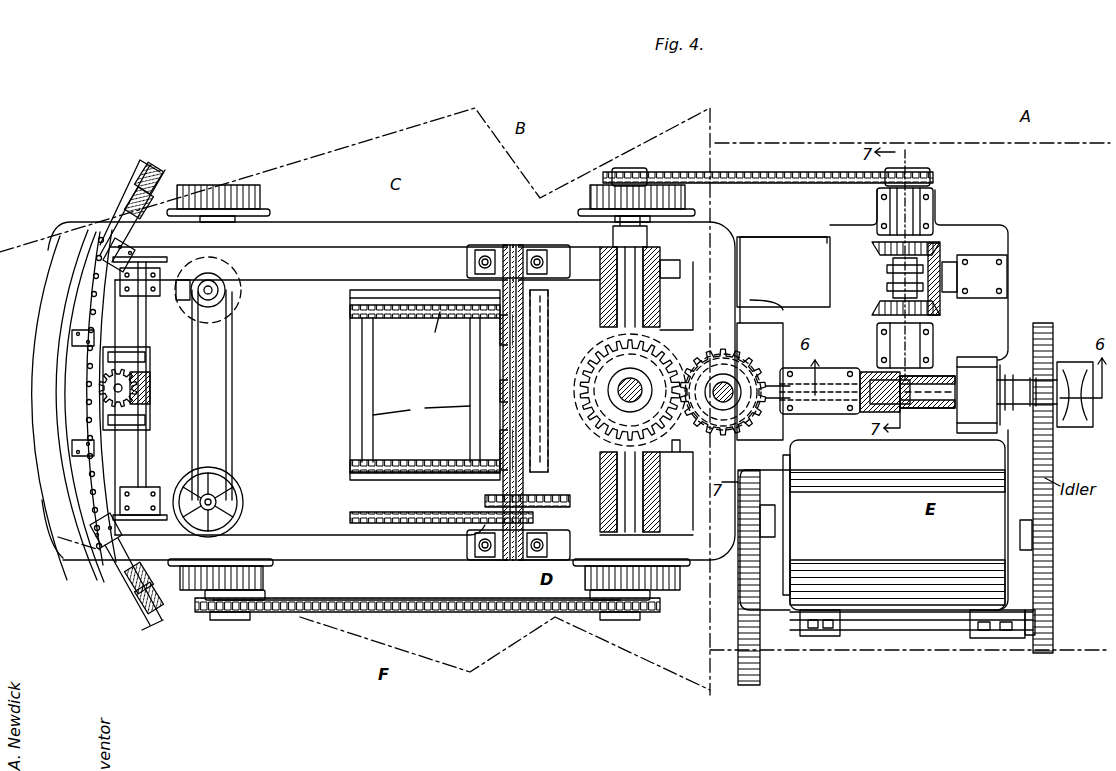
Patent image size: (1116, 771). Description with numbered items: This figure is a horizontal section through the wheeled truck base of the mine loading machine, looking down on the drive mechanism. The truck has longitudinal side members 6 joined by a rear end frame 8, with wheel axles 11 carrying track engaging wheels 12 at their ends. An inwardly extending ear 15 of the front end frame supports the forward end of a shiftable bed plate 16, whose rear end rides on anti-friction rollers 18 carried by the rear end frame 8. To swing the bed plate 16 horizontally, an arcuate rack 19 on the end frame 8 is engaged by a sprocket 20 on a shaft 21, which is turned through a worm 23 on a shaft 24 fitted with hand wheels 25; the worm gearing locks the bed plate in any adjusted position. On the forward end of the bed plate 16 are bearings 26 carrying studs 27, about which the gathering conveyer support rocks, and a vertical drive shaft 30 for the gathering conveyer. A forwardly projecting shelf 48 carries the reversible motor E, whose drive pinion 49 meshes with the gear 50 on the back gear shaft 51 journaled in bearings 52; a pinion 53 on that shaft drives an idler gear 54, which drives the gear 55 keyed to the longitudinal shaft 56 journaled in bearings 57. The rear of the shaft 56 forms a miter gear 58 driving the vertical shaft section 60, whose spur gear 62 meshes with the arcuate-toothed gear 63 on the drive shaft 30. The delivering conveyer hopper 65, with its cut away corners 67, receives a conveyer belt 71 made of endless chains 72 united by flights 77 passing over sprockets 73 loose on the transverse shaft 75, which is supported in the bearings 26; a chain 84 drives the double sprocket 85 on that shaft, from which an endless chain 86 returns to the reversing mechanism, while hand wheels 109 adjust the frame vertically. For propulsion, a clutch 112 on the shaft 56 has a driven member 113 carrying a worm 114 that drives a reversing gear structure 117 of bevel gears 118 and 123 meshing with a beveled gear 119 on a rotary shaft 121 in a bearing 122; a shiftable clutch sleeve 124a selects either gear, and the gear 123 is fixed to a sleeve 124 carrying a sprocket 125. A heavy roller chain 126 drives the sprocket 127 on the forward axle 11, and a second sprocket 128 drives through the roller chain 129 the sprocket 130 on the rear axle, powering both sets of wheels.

The side members 6 is at (305, 228).
The rear end frame 8 is at (40, 476).
The wheel axles 11 is at (212, 575).
The track engaging wheels 12 is at (210, 200).
The ear 15 is at (745, 320).
The bed plate 16 is at (296, 292).
The anti-friction rollers 18 is at (148, 163).
The arcuate rack 19 is at (95, 298).
The sprocket 20 is at (95, 405).
The shaft 21 is at (145, 372).
The worm 23 is at (150, 395).
The shaft 24 is at (150, 447).
The hand wheels 25 is at (168, 260).
The bearings 26 is at (660, 250).
The studs 27 is at (660, 292).
The drive shaft 30 is at (735, 358).
The shelf 48 is at (998, 308).
The drive pinion 49 is at (775, 520).
The gear 50 is at (775, 683).
The back gear shaft 51 is at (905, 630).
The bearings 52 is at (825, 637).
The pinion 53 is at (1053, 623).
The idler gear 54 is at (1053, 554).
The gear 55 is at (1053, 340).
The shaft 56 is at (1030, 380).
The bearings 57 is at (835, 372).
The miter gear 58 is at (740, 432).
The vertical shaft section 60 is at (720, 395).
The spur gear 62 is at (725, 390).
The gear 63 is at (595, 358).
The hopper 65 is at (508, 660).
The cut away corners 67 is at (605, 650).
The conveyer belt 71 is at (445, 332).
The endless chains 72 is at (388, 312).
The sprockets 73 is at (465, 285).
The shaft 75 is at (510, 364).
The flights 77 is at (421, 412).
The chain 84 is at (545, 510).
The double sprocket 85 is at (500, 525).
The endless chain 86 is at (350, 515).
The hand wheels 109 is at (243, 490).
The clutch 112 is at (965, 358).
The driven member 113 is at (945, 410).
The worm 114 is at (872, 418).
The reversing gear structure 117 is at (942, 260).
The bevel gear 118 is at (940, 312).
The beveled gear 119 is at (945, 252).
The rotary shaft 121 is at (990, 282).
The bearing 122 is at (1008, 265).
The beveled gear 123 is at (918, 215).
The sleeve 124 is at (912, 170).
The shiftable clutch sleeve 124a is at (893, 272).
The sprocket 125 is at (890, 170).
The roller chain 126 is at (768, 172).
The sprocket 127 is at (630, 178).
The sprocket 128 is at (635, 618).
The roller chain 129 is at (352, 615).
The sprocket 130 is at (210, 612).
The motor E is at (897, 525).